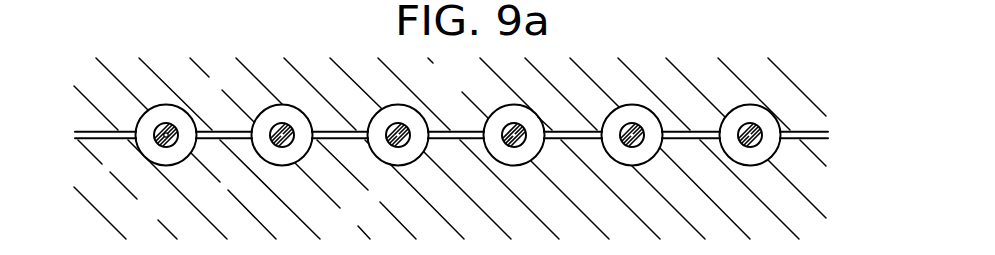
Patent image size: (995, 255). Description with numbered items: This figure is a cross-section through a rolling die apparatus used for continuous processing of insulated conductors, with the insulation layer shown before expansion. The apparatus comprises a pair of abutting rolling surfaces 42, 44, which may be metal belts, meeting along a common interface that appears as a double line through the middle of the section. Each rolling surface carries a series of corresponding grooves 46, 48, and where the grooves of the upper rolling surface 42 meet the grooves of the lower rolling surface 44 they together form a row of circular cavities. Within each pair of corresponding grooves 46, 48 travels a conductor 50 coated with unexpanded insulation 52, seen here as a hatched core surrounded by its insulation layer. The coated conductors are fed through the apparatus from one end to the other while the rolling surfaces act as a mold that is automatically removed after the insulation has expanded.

The rolling surface 42 is at (463, 88).
The rolling surface 44 is at (378, 223).
The groove 46 is at (193, 83).
The groove 48 is at (188, 153).
The conductor 50 is at (157, 139).
The unexpanded insulation 52 is at (166, 140).